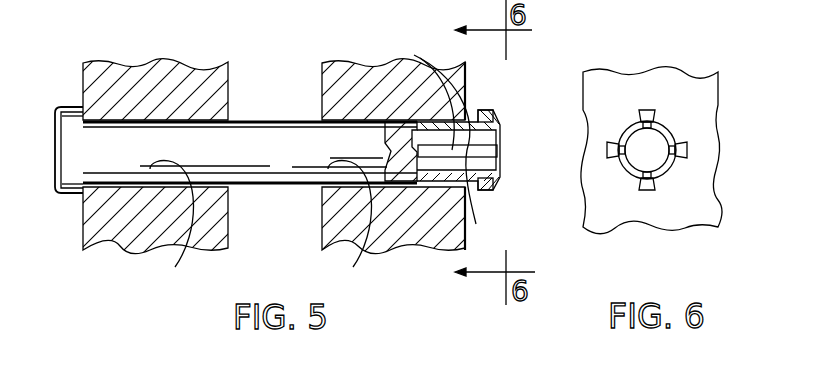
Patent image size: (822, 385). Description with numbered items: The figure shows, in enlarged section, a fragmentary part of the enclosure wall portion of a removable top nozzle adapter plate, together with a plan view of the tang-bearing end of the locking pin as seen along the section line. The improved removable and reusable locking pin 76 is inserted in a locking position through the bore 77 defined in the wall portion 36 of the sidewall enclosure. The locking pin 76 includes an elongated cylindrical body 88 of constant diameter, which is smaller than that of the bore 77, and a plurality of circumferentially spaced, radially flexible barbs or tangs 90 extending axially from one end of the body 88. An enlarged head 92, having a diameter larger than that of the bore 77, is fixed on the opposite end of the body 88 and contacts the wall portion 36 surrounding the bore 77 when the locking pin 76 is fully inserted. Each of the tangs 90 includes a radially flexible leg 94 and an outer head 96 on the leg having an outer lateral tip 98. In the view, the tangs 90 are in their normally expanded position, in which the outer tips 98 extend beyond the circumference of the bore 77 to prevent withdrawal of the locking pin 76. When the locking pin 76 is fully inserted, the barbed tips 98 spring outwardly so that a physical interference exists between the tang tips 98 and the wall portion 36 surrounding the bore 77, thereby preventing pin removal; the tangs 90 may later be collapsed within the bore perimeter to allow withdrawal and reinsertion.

In FIG. 5, the support block 36 is at (222, 233).
In FIG. 6, the support block 36 is at (695, 212).
In FIG. 5, the locking pin 76 is at (263, 117).
In FIG. 6, the locking pin 76 is at (630, 180).
In FIG. 5, the bore 77 is at (256, 228).
In FIG. 5, the elongated cylindrical body 88 is at (268, 161).
In FIG. 6, the elongated cylindrical body 88 is at (672, 171).
In FIG. 5, the tangs 90 is at (504, 172).
In FIG. 6, the tangs 90 is at (694, 147).
In FIG. 5, the enlarged head 92 is at (75, 176).
In FIG. 5, the radially flexible leg 94 is at (418, 58).
In FIG. 5, the outer head 96 is at (490, 117).
In FIG. 6, the outer head 96 is at (647, 150).
In FIG. 5, the outer lateral tip 98 is at (471, 109).
In FIG. 6, the outer lateral tip 98 is at (608, 146).